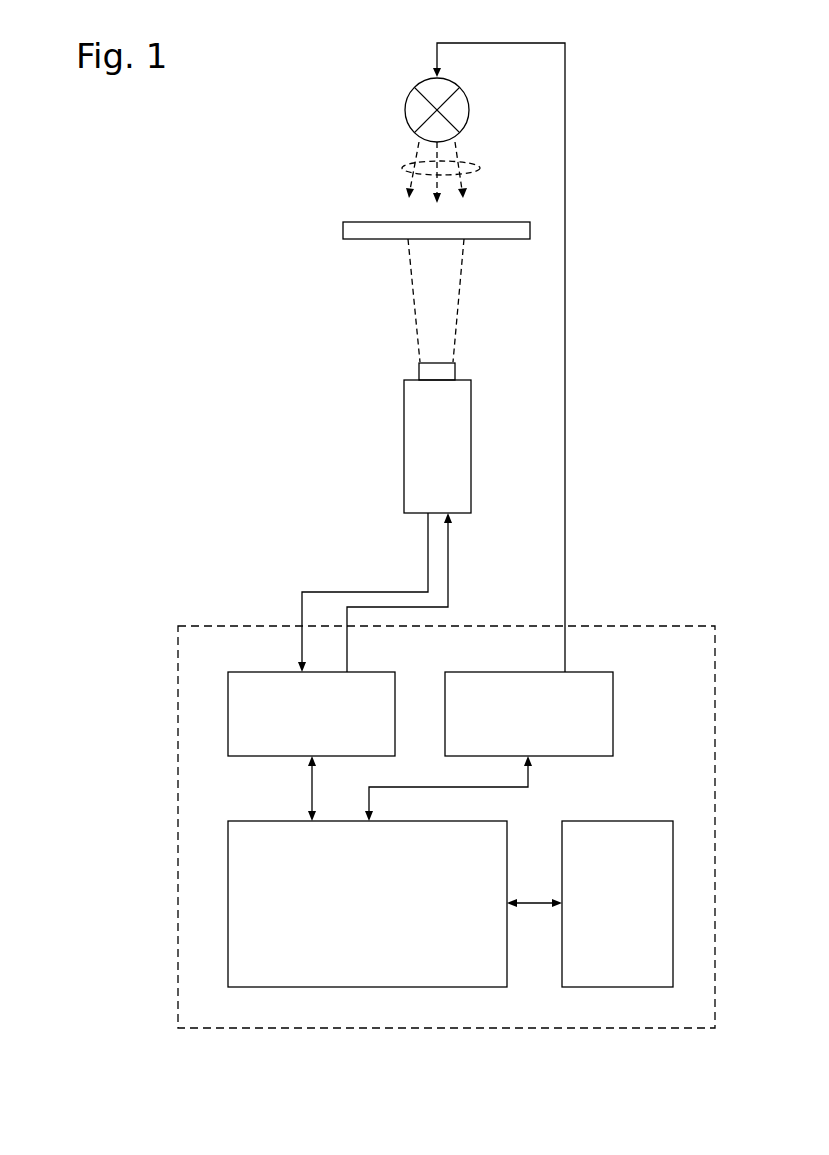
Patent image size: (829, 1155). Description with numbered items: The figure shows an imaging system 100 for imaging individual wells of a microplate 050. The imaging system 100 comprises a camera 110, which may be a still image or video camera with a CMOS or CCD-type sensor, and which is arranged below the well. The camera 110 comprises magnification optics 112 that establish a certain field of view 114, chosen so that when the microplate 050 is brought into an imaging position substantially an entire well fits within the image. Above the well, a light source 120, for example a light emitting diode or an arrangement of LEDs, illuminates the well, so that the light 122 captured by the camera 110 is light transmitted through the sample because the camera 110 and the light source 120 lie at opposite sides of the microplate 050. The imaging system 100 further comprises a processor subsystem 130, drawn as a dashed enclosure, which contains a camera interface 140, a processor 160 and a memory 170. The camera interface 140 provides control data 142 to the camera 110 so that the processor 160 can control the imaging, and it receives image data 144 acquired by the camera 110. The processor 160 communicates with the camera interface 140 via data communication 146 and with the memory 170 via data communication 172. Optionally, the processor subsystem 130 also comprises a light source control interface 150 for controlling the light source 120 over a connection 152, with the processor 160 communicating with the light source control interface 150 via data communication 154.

The imaging system 100 is at (692, 176).
The microplate 050 is at (343, 230).
The camera 110 is at (404, 452).
The magnification optics 112 is at (419, 375).
The field of view 114 is at (414, 302).
The light source 120 is at (406, 112).
The light 122 is at (405, 166).
The processor subsystem 130 is at (660, 626).
The camera interface 140 is at (311, 714).
The control data 142 is at (448, 578).
The image data 144 is at (428, 552).
The data communication 146 is at (312, 780).
The light source control interface 150 is at (529, 714).
The light source control signal 152 is at (566, 500).
The data communication 154 is at (528, 772).
The processor 160 is at (367, 904).
The memory 170 is at (617, 904).
The data communication 172 is at (548, 900).